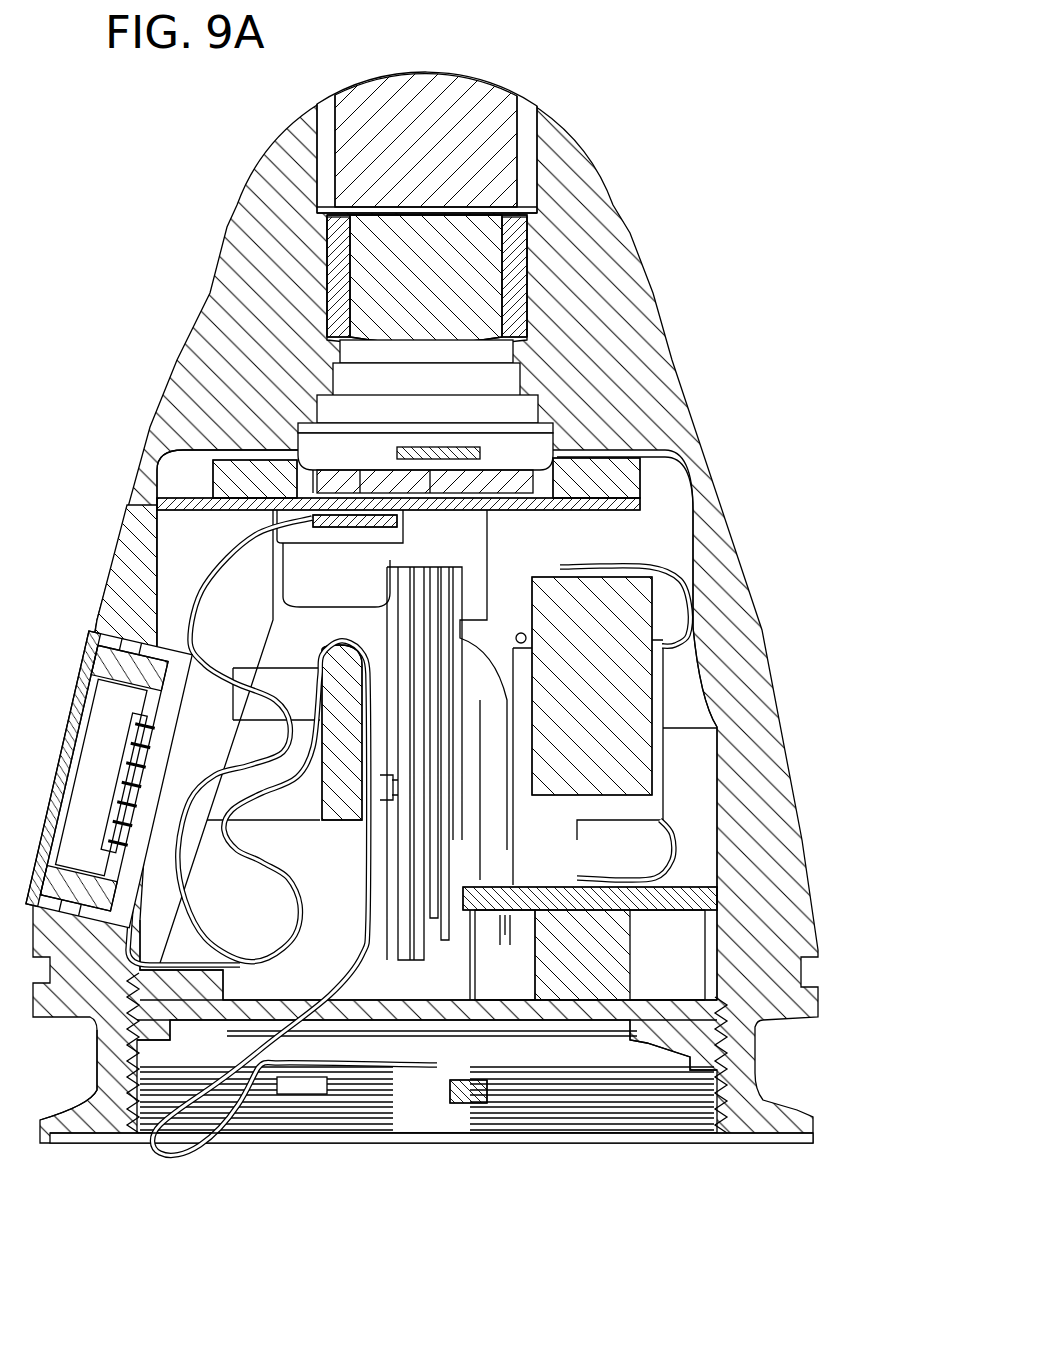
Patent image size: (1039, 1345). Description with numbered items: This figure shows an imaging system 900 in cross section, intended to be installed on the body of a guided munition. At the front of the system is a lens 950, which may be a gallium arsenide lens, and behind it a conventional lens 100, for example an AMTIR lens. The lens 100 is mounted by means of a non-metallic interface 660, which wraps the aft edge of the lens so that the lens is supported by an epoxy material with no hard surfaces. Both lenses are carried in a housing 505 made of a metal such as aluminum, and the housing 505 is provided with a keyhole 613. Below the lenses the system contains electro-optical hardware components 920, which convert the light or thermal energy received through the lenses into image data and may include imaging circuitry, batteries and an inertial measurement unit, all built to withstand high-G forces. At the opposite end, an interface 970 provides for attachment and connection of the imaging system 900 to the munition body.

The imaging system 900 is at (476, 636).
The housing 505 is at (641, 229).
The lens 950 is at (450, 153).
The lens 100 is at (450, 288).
The non-metallic interface 660 is at (338, 280).
The keyhole 613 is at (572, 430).
The electro-optical hardware components 920 is at (718, 448).
The interface 970 is at (113, 1100).